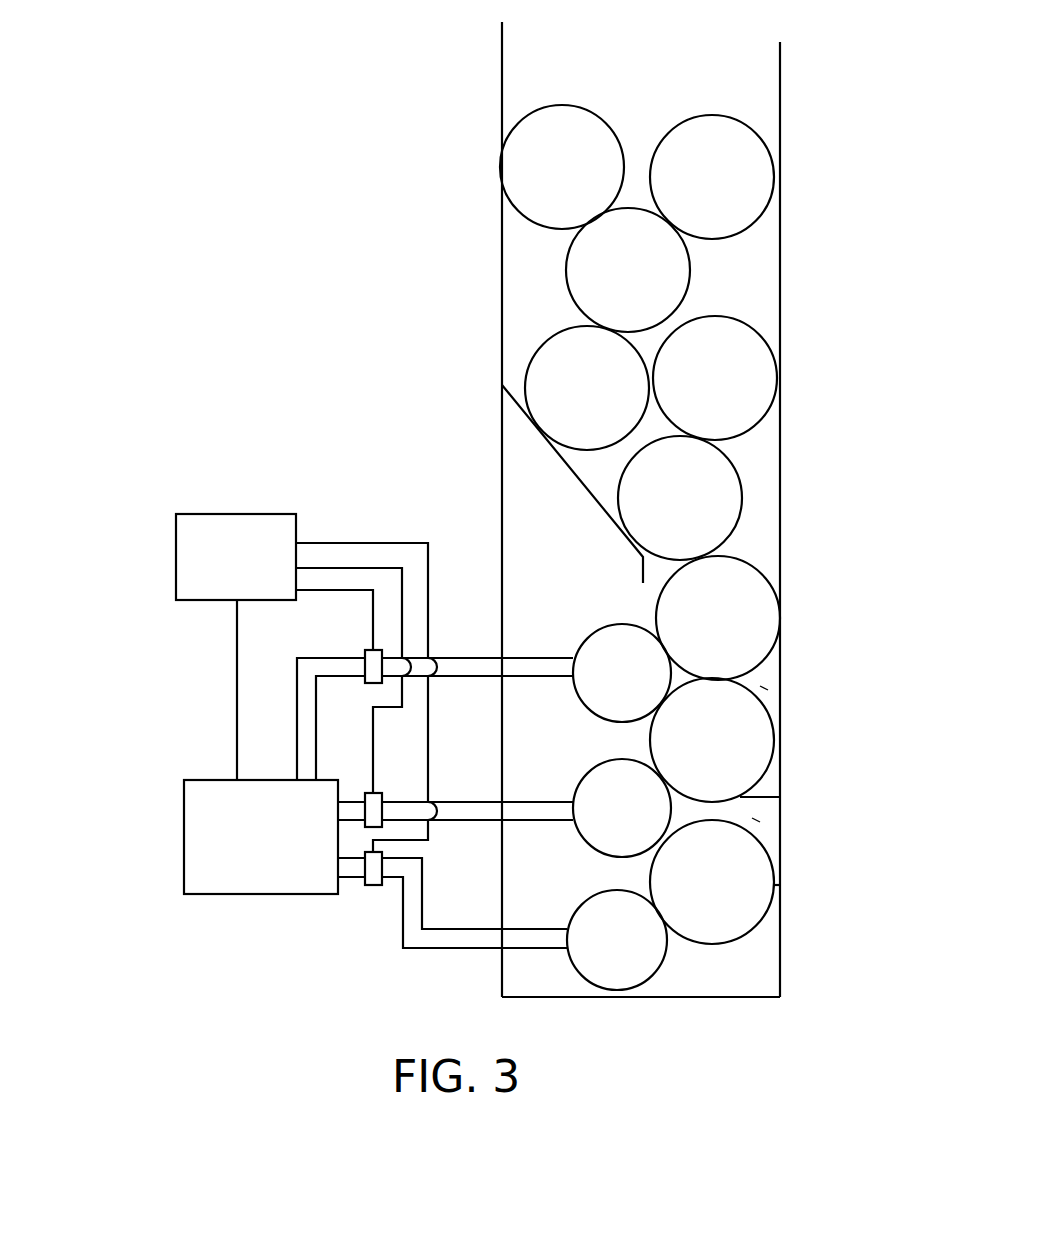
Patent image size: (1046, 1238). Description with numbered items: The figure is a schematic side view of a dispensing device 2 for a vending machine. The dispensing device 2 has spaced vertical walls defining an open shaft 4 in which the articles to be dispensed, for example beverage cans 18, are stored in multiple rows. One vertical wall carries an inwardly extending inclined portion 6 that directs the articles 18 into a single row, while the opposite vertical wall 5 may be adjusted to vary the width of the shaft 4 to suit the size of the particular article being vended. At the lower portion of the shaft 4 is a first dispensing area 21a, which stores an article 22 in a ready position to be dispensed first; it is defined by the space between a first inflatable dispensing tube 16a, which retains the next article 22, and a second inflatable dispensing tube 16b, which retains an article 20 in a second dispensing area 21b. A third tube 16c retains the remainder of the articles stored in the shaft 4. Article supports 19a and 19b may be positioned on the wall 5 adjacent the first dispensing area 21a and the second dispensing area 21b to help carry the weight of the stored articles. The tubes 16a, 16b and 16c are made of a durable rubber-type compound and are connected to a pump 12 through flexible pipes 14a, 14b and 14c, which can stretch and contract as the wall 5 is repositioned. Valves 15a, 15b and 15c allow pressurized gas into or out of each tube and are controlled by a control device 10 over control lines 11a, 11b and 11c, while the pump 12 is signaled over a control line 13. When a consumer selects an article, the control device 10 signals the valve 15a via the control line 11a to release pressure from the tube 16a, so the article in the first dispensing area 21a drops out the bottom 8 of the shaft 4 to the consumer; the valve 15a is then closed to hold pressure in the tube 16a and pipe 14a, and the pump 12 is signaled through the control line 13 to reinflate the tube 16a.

The dispensing device 2 is at (343, 48).
The shaft 4 is at (538, 53).
The vertical wall 5 is at (782, 277).
The inclined portion 6 is at (590, 493).
The bottom 8 is at (655, 1000).
The control device 10 is at (218, 532).
The control line 11a is at (428, 543).
The control line 11b is at (402, 568).
The control line 11c is at (373, 590).
The pump 12 is at (198, 833).
The control line 13 is at (232, 627).
The pipe 14a is at (466, 938).
The pipe 14b is at (545, 808).
The pipe 14c is at (553, 667).
The valve 15a is at (370, 884).
The valve 15b is at (362, 812).
The valve 15c is at (372, 662).
The first inflatable dispensing tube 16a is at (628, 928).
The second inflatable dispensing tube 16b is at (633, 803).
The third tube 16c is at (617, 638).
The beverage cans 18 is at (551, 159).
The article support 19a is at (772, 925).
The article support 19b is at (775, 787).
The article 20 is at (750, 737).
The first dispensing area 21a is at (756, 820).
The second dispensing area 21b is at (763, 688).
The article 22 is at (699, 895).